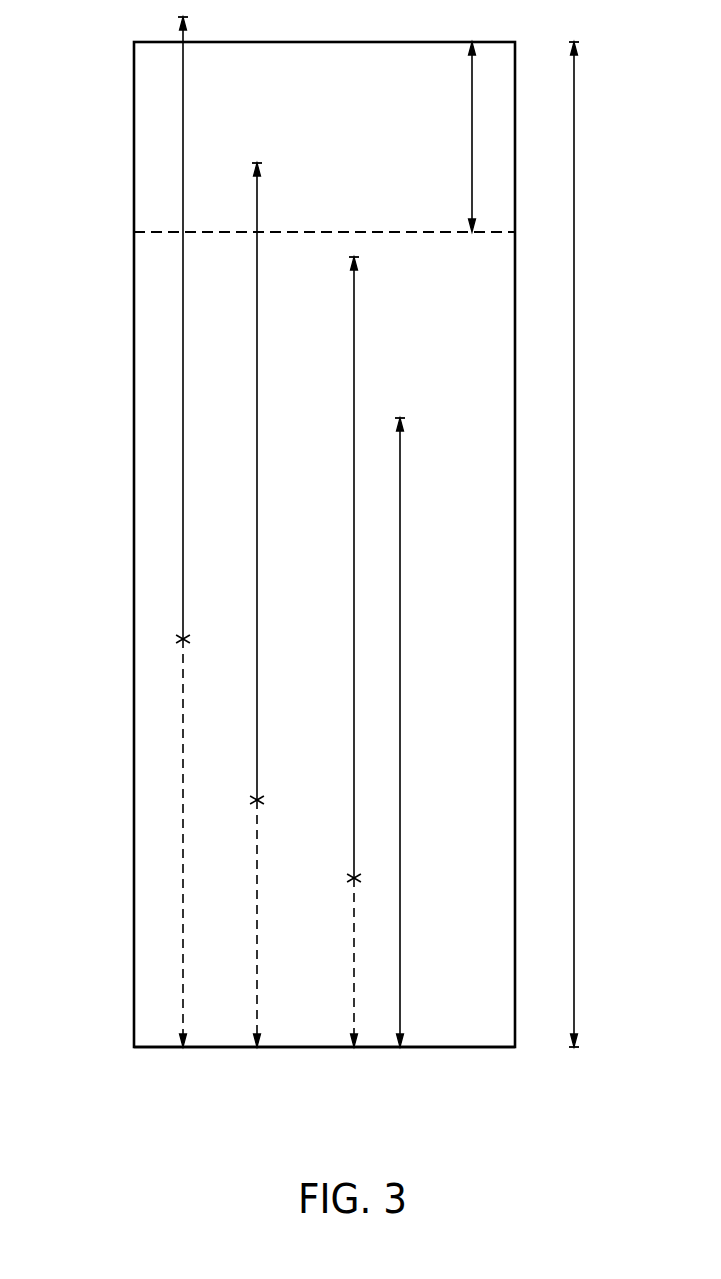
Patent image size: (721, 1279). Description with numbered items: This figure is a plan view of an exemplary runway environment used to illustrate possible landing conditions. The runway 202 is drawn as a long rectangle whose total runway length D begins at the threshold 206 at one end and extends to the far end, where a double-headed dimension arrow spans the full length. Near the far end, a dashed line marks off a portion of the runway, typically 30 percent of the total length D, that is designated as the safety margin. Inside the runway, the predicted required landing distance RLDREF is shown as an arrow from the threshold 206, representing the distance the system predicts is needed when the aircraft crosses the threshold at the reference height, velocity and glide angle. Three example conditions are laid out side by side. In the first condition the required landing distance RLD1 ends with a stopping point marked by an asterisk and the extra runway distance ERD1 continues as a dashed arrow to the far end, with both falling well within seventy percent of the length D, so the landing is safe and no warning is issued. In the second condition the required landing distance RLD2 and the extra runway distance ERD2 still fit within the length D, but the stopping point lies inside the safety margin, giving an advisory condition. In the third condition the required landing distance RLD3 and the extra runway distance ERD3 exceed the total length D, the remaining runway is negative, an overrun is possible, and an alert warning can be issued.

The runway 202 is at (156, 943).
The threshold 206 is at (149, 1048).
The required landing distance RLD1 is at (354, 326).
The required landing distance RLD2 is at (257, 432).
The required landing distance RLD3 is at (183, 148).
The predicted required landing distance RLDREF is at (400, 648).
The extra runway distance ERD1 is at (354, 1004).
The extra runway distance ERD2 is at (257, 908).
The extra runway distance ERD3 is at (183, 762).
The safety margin percentage 30 is at (472, 123).
The total runway length D is at (574, 423).